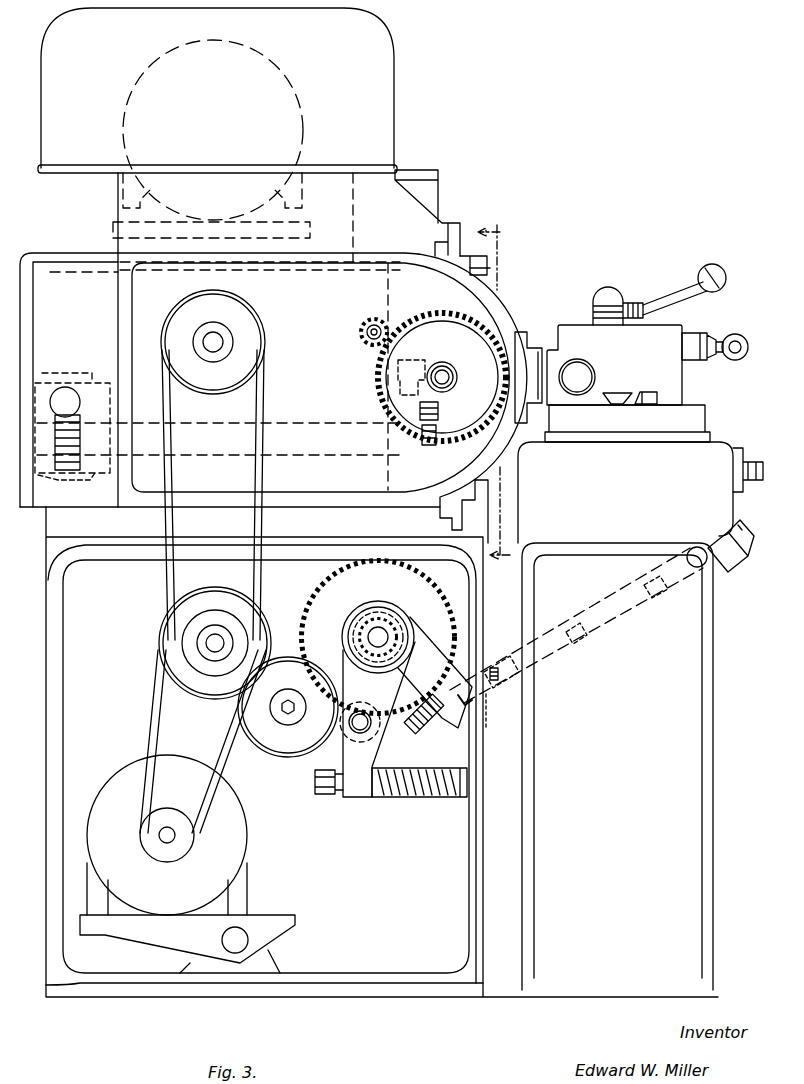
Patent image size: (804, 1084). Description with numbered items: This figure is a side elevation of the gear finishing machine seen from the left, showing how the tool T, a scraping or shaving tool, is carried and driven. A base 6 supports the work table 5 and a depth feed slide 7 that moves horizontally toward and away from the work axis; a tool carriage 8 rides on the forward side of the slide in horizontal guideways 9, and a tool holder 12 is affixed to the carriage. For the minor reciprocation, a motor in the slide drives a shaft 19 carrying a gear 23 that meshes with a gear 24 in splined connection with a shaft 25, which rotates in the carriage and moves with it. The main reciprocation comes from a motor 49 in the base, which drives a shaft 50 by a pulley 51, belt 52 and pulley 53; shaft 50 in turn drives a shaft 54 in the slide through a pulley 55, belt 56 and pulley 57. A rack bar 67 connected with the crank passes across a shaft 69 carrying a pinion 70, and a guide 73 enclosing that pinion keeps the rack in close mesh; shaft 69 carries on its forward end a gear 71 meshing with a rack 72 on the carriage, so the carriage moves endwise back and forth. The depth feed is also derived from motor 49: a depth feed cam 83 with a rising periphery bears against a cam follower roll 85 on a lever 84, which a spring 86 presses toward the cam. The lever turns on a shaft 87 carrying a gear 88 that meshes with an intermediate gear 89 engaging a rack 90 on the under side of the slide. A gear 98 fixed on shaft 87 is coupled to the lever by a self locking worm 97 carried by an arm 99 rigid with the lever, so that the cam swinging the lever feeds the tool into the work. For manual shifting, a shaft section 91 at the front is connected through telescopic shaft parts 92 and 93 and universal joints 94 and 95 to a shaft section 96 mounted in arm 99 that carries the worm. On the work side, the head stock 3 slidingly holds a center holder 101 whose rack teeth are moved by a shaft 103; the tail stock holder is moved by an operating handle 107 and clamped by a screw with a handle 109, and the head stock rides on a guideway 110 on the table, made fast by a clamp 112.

The head stock 3 is at (668, 336).
The table 5 is at (690, 420).
The base 6 is at (70, 706).
The depth feed slide 7 is at (351, 512).
The tool carriage 8 is at (470, 265).
The horizontal guideways 9 is at (458, 233).
The tool holder 12 is at (480, 275).
The shaft 19 is at (376, 318).
The gear 23 is at (360, 335).
The gear 24 is at (378, 386).
The shaft 25 is at (448, 370).
The motor 49 is at (228, 838).
The shaft 50 is at (207, 641).
The pulley 51 is at (176, 808).
The belt 52 is at (152, 722).
The pulley 53 is at (204, 690).
The shaft 54 is at (208, 337).
The pulley 55 is at (232, 606).
The belt 56 is at (258, 478).
The pulley 57 is at (250, 348).
The rack bar 67 is at (62, 388).
The shaft 69 is at (292, 422).
The pinion 70 is at (80, 478).
The gear 71 is at (442, 438).
The rack 72 is at (440, 400).
The guide 73 is at (100, 385).
The depth feed cam 83 is at (274, 740).
The lever 84 is at (350, 800).
The cam follower roll 85 is at (345, 724).
The spring 86 is at (422, 800).
The shaft 87 is at (386, 642).
The gear 88 is at (356, 636).
The intermediate gear 89 is at (362, 606).
The rack 90 is at (338, 574).
The shaft section 91 is at (738, 528).
The telescopic shaft part 92 is at (640, 612).
The telescopic shaft part 93 is at (574, 638).
The universal joint 94 is at (662, 592).
The universal joint 95 is at (500, 684).
The shaft section 96 is at (496, 721).
The self locking worm 97 is at (436, 726).
The gear 98 is at (458, 632).
The arm 99 is at (455, 666).
The center holder 101 is at (580, 366).
The shaft 103 is at (755, 460).
The operating handle 107 is at (742, 338).
The handle 109 is at (716, 270).
The guideway 110 is at (617, 396).
The clamp 112 is at (648, 395).
The tool T is at (543, 342).